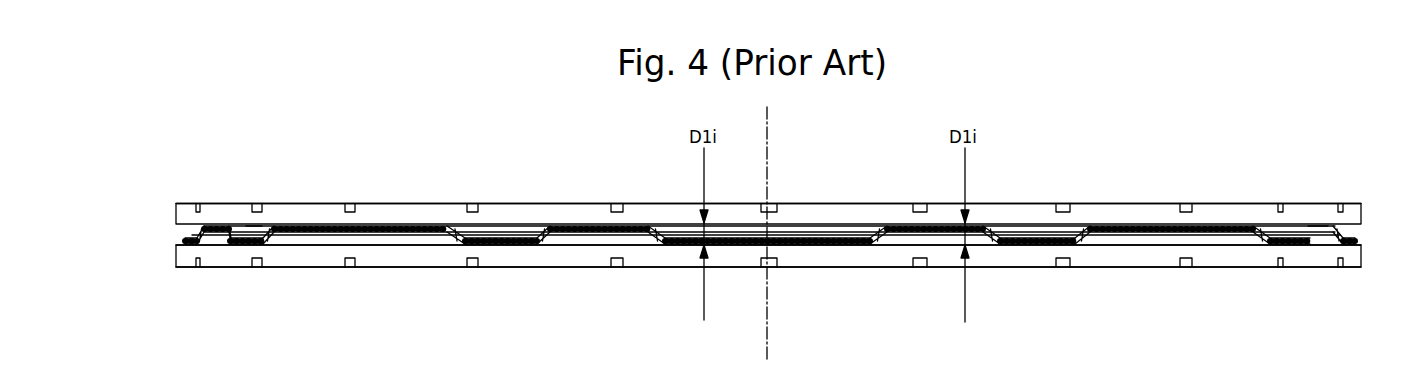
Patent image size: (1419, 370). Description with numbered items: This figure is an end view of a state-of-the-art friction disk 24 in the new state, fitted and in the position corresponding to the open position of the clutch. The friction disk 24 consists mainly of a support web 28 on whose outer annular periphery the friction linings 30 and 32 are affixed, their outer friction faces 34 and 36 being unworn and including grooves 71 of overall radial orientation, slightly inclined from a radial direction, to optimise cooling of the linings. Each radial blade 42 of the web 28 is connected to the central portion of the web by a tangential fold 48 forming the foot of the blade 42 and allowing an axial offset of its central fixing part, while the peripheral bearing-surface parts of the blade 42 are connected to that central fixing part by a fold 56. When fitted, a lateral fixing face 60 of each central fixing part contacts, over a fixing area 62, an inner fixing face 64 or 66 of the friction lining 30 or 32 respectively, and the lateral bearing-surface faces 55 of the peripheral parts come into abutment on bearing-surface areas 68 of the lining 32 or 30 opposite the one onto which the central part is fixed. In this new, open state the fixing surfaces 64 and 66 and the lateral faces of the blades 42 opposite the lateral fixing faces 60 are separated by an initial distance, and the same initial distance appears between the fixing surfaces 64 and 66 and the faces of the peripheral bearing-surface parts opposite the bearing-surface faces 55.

The friction disk 24 is at (738, 185).
The support web 28 is at (759, 235).
The friction lining 30 is at (402, 213).
The friction lining 32 is at (420, 258).
The friction face 34 is at (555, 203).
The friction face 36 is at (489, 268).
The radial blade 42 is at (785, 250).
The tangential fold 48 is at (833, 237).
The lateral bearing-surface face 55 is at (234, 246).
The fold 56 is at (452, 230).
The lateral fixing face 60 is at (317, 227).
The fixing area 62 is at (330, 233).
The inner fixing face 64 is at (1358, 230).
The inner fixing face 66 is at (1315, 237).
The bearing-surface area 68 is at (252, 227).
The groove 71 is at (613, 207).